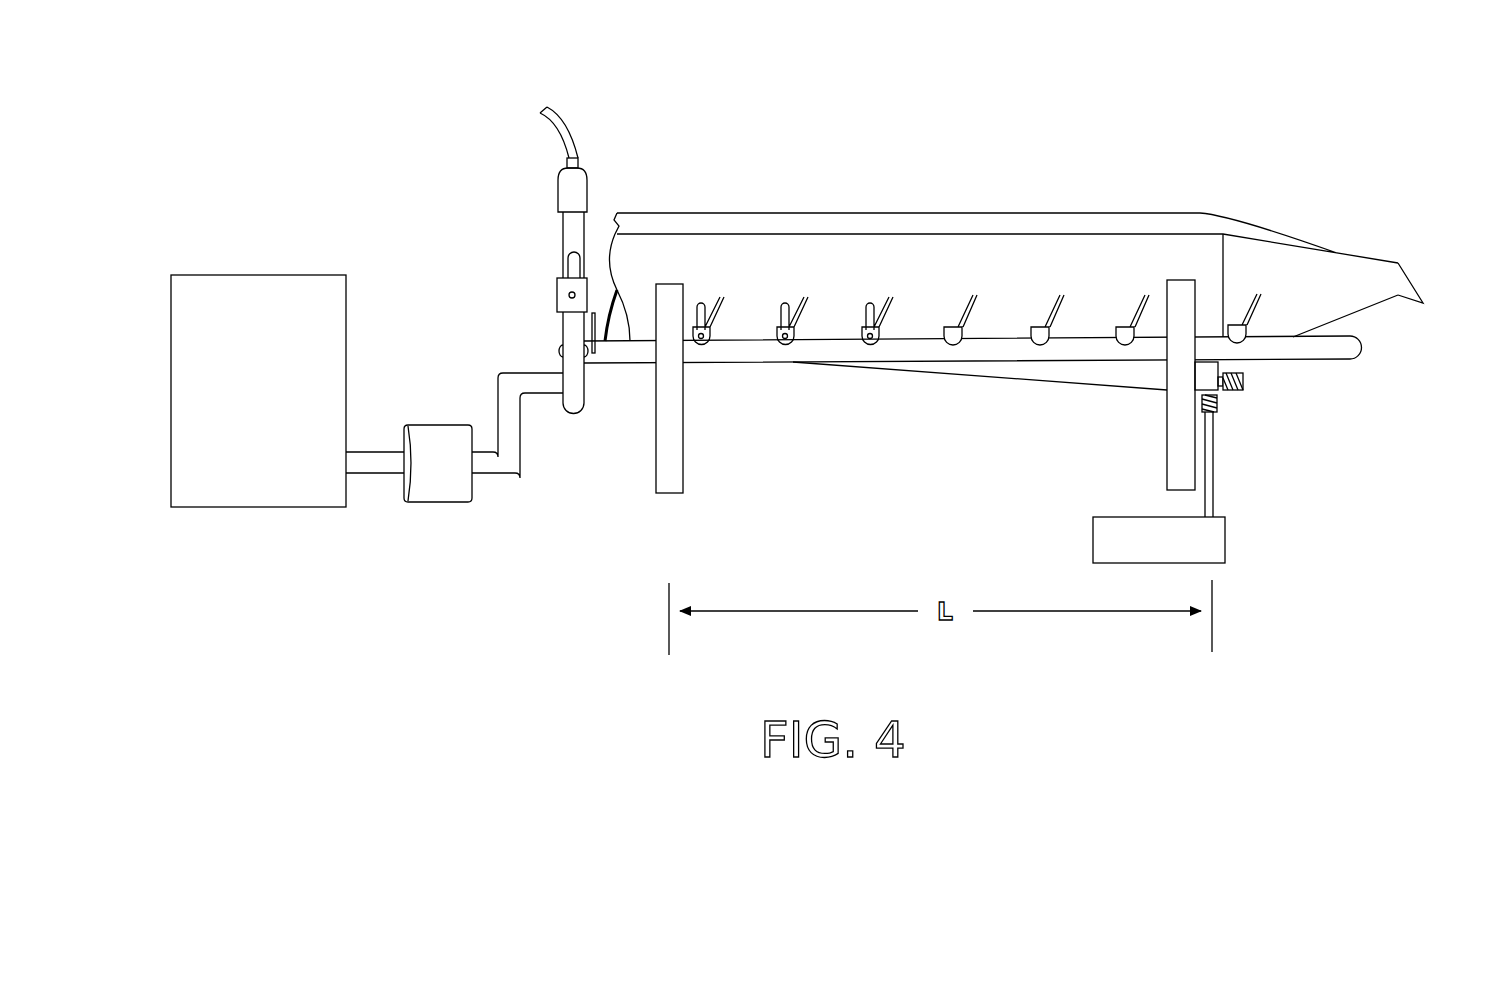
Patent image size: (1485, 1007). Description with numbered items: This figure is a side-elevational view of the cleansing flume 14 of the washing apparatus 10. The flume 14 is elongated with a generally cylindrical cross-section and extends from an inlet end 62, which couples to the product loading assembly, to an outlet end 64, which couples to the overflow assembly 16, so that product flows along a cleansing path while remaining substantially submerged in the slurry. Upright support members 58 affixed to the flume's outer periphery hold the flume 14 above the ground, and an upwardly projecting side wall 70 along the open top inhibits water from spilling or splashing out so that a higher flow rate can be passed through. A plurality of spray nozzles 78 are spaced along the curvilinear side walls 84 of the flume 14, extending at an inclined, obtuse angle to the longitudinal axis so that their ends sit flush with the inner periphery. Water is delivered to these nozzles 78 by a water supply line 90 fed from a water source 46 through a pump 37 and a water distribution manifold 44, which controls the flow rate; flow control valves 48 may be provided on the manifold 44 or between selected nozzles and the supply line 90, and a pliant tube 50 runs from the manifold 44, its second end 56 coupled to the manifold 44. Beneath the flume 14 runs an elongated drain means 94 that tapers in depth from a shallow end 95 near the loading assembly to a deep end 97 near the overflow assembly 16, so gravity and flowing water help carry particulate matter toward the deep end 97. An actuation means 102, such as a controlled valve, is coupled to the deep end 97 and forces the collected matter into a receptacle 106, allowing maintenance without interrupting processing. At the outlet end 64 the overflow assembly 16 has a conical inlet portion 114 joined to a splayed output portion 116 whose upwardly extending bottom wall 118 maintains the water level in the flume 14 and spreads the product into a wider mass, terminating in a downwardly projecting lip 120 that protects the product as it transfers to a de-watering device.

The washing apparatus 10 is at (862, 128).
The cleansing flume 14 is at (1097, 186).
The overflow assembly 16 is at (1334, 200).
The pump 37 is at (409, 463).
The water distribution manifold 44 is at (688, 251).
The water source 46 is at (258, 391).
The flow control valve 48 is at (560, 344).
The pliant tube 50 is at (556, 118).
The second end 56 is at (565, 151).
The upright support member 58 is at (673, 462).
The inlet end 62 is at (622, 264).
The outlet end 64 is at (1212, 251).
The side wall 70 is at (648, 225).
The spray nozzle 78 is at (968, 297).
The curvilinear side wall 84 is at (987, 247).
The water supply line 90 is at (882, 353).
The drain means 94 is at (1045, 380).
The shallow end 95 is at (818, 367).
The deep end 97 is at (1210, 370).
The actuation means 102 is at (1217, 408).
The receptacle 106 is at (1159, 540).
The conical inlet portion 114 is at (1248, 253).
The splayed output portion 116 is at (1372, 262).
The bottom wall 118 is at (1385, 298).
The lip 120 is at (1422, 295).